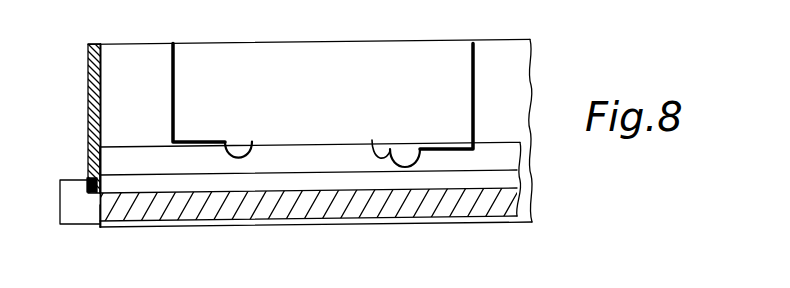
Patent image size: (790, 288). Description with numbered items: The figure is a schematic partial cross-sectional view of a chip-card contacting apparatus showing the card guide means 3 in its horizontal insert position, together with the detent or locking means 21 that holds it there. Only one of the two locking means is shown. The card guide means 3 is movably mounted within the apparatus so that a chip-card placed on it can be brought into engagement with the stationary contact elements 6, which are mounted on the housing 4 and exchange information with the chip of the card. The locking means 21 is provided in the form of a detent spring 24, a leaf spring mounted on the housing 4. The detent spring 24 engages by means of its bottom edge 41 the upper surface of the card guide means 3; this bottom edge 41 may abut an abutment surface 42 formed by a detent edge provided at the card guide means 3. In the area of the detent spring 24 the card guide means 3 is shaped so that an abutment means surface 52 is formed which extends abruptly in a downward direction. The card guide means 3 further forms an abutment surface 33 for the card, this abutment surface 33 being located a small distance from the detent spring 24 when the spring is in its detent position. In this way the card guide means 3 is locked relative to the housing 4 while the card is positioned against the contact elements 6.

The card guide means 3 is at (452, 219).
The housing 4 is at (500, 39).
The contact elements 6 is at (255, 148).
The detent or locking means 21 is at (108, 210).
The detent spring 24 is at (88, 95).
The abutment surface 33 is at (88, 178).
The bottom edge 41 is at (160, 142).
The abutment surface 42 is at (95, 188).
The abutment means surface 52 is at (99, 204).